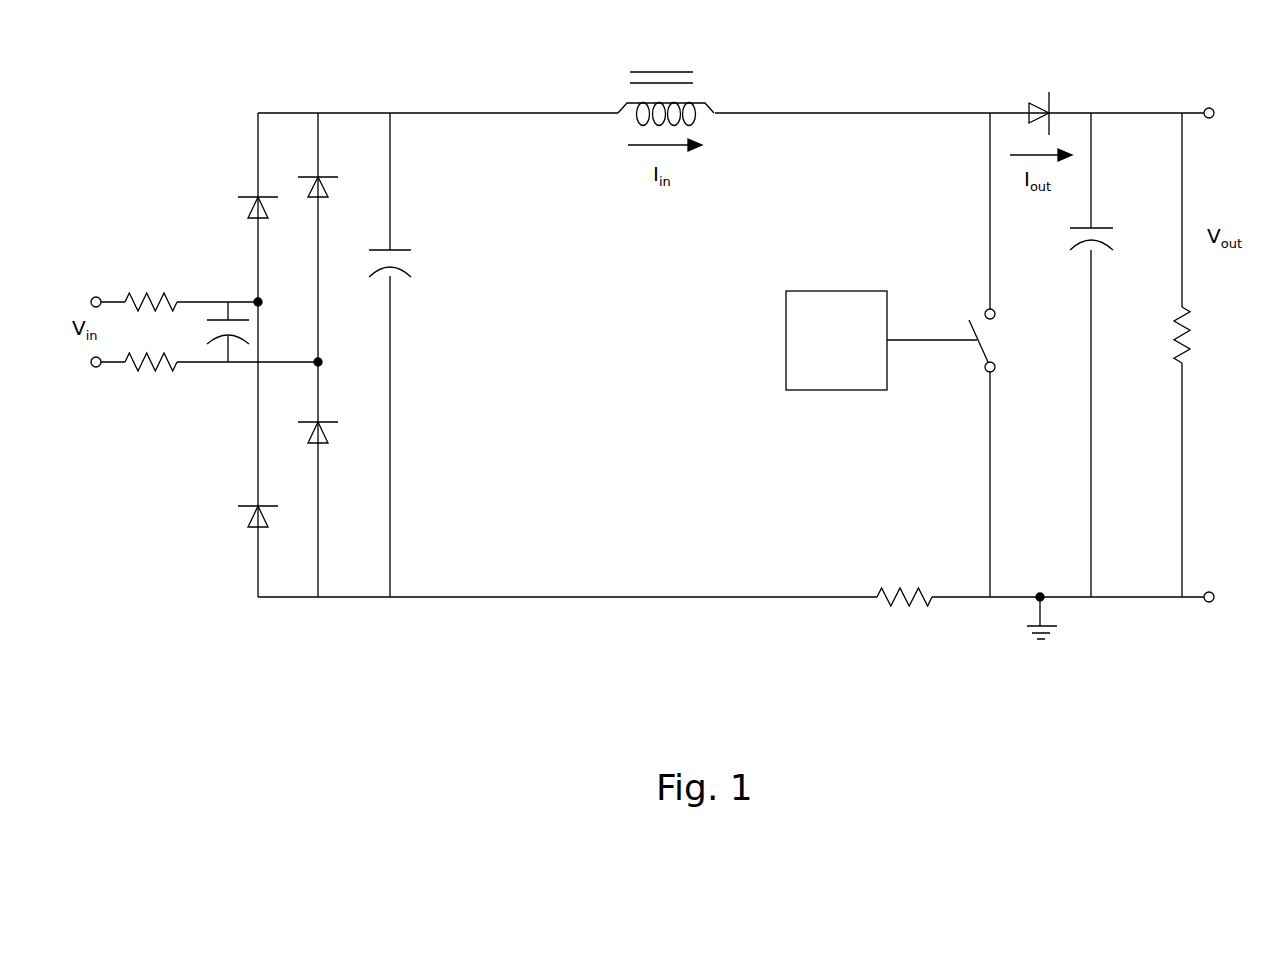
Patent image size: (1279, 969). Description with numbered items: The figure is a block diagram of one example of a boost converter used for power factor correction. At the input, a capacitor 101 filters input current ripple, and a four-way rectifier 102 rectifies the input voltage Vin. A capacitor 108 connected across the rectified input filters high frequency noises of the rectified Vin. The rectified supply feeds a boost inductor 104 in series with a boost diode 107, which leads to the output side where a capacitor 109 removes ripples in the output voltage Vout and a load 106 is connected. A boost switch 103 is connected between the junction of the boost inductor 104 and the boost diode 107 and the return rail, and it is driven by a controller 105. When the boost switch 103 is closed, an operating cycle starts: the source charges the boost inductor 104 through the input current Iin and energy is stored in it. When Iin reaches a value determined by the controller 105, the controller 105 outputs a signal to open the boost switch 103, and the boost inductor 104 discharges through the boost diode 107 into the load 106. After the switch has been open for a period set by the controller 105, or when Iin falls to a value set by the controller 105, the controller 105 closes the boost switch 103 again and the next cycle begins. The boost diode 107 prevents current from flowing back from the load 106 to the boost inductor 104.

The capacitor 101 is at (206, 332).
The four-way rectifier 102 is at (286, 303).
The boost switch 103 is at (967, 340).
The boost inductor 104 is at (666, 78).
The controller 105 is at (831, 358).
The load 106 is at (1211, 332).
The boost diode 107 is at (1050, 95).
The capacitor 108 is at (423, 261).
The capacitor 109 is at (1114, 240).